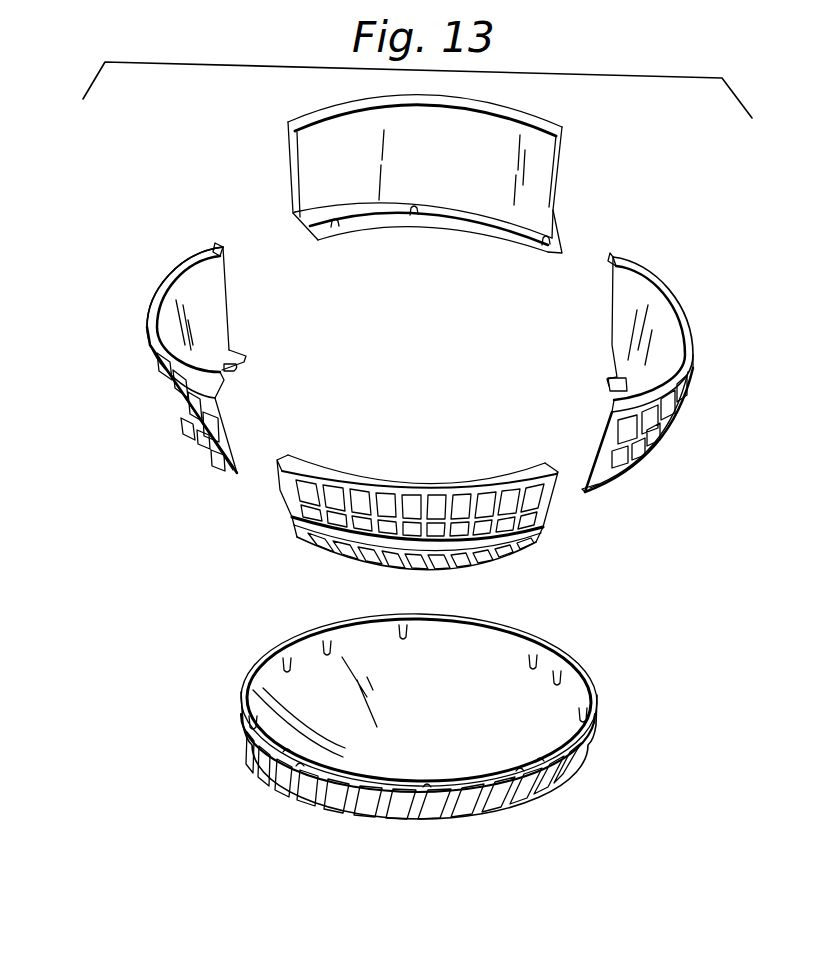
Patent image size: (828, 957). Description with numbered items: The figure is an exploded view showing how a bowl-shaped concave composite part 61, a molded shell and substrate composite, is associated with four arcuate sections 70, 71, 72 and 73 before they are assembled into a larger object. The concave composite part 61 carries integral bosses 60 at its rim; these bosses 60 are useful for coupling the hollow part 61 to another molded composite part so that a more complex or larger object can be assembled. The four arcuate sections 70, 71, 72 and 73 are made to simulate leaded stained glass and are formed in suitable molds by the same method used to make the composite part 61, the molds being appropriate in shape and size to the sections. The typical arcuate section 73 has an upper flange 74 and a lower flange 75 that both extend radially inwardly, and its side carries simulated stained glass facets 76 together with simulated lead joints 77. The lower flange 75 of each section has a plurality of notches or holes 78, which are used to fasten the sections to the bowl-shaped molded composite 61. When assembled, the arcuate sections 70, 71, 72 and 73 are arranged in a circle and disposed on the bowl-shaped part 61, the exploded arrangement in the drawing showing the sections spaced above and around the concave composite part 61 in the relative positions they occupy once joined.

The integral boss 60 is at (532, 653).
The concave composite part 61 is at (465, 713).
The arcuate section 70 is at (578, 178).
The arcuate section 71 is at (688, 404).
The arcuate section 72 is at (299, 557).
The arcuate section 73 is at (178, 358).
The upper flange 74 is at (176, 280).
The lower flange 75 is at (234, 358).
The simulated stained glass facets 76 is at (195, 413).
The simulated lead joints 77 is at (206, 446).
The notches or holes 78 is at (234, 370).